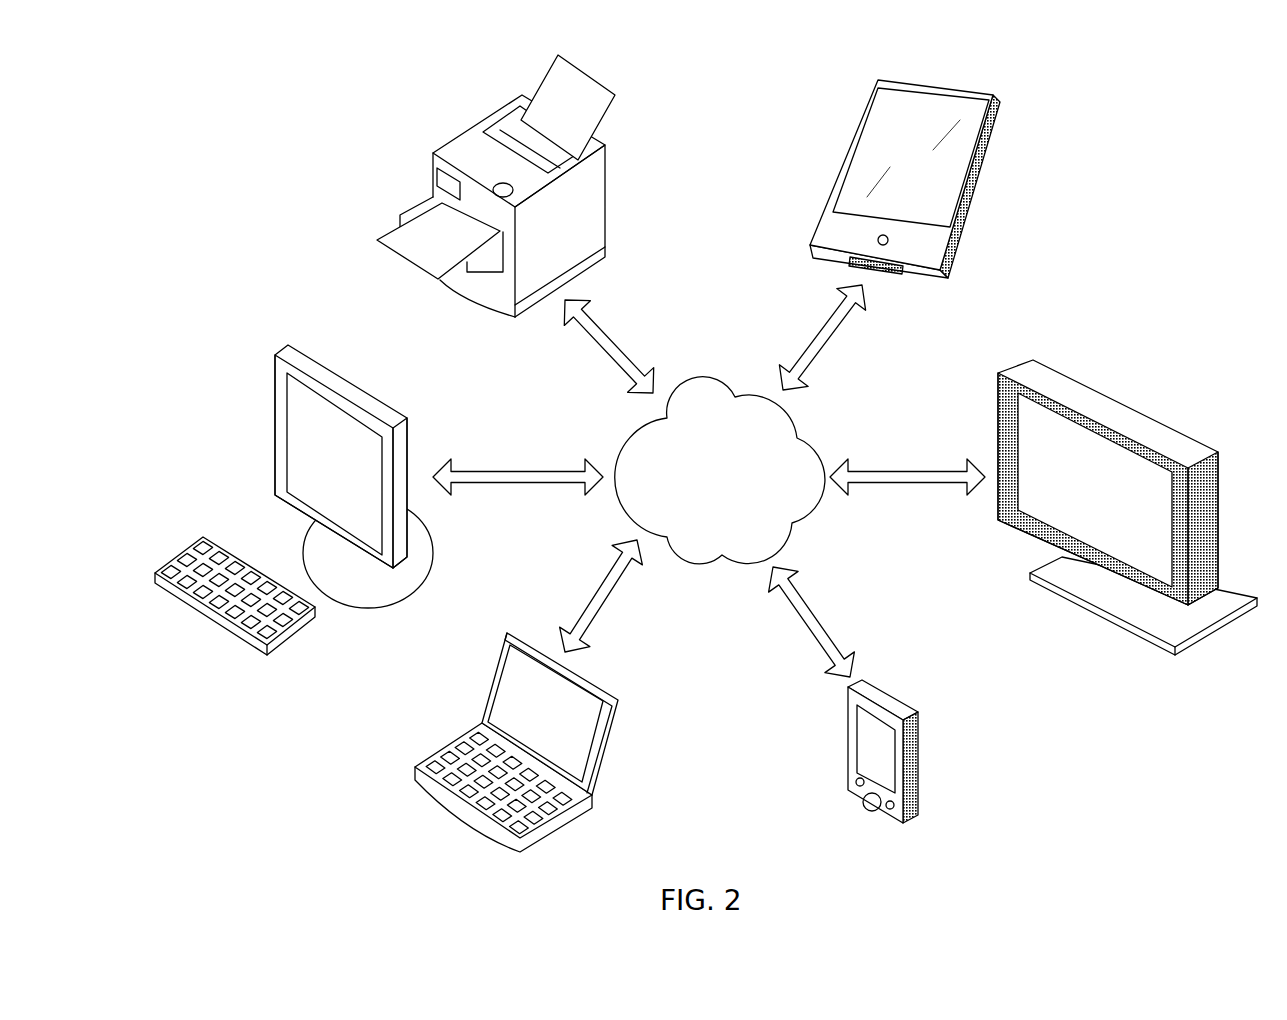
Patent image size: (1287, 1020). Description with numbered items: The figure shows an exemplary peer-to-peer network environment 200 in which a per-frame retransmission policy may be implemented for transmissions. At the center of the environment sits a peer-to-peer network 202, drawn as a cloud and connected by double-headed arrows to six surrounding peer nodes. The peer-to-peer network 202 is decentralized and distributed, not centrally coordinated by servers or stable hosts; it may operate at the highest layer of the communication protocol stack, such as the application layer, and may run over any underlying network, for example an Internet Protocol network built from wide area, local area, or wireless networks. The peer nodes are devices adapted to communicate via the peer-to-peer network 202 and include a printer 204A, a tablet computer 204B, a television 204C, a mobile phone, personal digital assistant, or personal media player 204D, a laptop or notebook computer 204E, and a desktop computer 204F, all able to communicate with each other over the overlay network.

The peer-to-peer network environment 200 is at (288, 161).
The peer-to-peer network 202 is at (712, 377).
The printer 204A is at (460, 134).
The tablet computer 204B is at (977, 183).
The television 204C is at (1138, 402).
The personal media player 204D is at (915, 763).
The laptop and notebook computer 204E is at (610, 753).
The desktop computer 204F is at (273, 422).